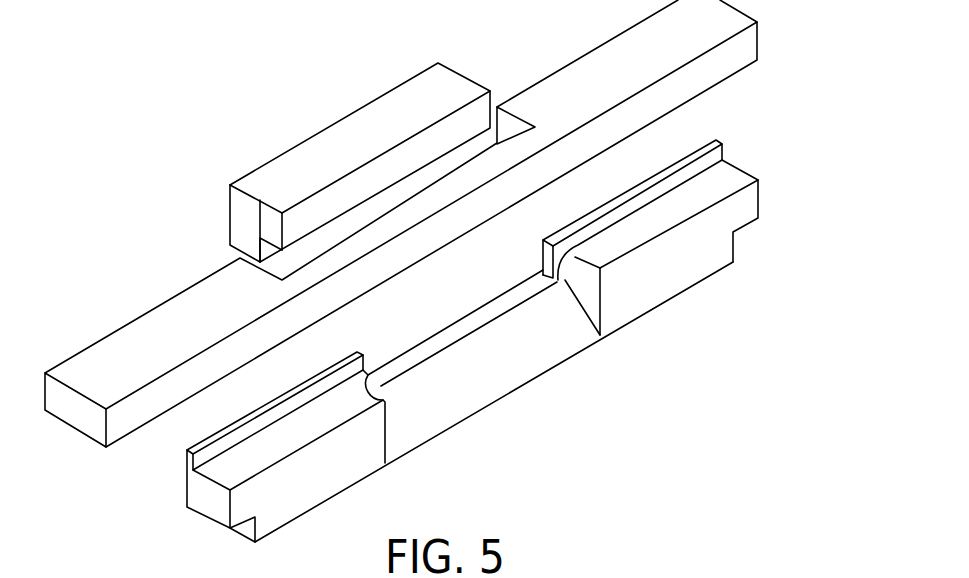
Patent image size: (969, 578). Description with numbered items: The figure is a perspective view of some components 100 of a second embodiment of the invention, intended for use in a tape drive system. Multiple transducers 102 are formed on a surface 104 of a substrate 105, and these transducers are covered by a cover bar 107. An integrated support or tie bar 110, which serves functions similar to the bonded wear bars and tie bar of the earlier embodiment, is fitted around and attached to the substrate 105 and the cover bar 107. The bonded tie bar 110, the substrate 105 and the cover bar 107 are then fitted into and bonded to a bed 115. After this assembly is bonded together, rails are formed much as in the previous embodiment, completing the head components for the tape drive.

The components 100 is at (798, 0).
The transducers 102 is at (380, 128).
The surface 104 is at (271, 262).
The substrate 105 is at (238, 228).
The cover bar 107 is at (470, 82).
The tie bar 110 is at (167, 313).
The bed 115 is at (635, 283).